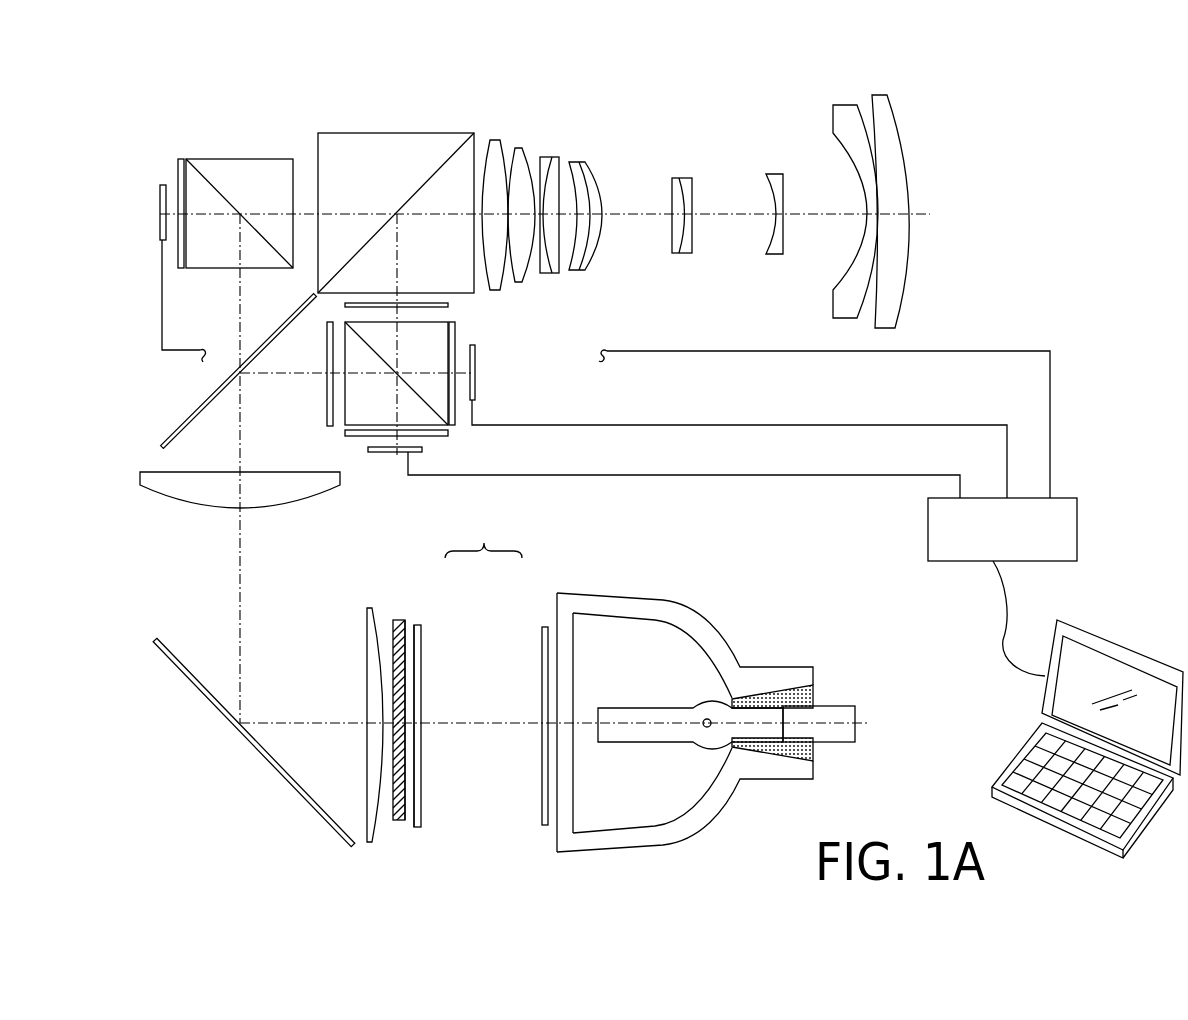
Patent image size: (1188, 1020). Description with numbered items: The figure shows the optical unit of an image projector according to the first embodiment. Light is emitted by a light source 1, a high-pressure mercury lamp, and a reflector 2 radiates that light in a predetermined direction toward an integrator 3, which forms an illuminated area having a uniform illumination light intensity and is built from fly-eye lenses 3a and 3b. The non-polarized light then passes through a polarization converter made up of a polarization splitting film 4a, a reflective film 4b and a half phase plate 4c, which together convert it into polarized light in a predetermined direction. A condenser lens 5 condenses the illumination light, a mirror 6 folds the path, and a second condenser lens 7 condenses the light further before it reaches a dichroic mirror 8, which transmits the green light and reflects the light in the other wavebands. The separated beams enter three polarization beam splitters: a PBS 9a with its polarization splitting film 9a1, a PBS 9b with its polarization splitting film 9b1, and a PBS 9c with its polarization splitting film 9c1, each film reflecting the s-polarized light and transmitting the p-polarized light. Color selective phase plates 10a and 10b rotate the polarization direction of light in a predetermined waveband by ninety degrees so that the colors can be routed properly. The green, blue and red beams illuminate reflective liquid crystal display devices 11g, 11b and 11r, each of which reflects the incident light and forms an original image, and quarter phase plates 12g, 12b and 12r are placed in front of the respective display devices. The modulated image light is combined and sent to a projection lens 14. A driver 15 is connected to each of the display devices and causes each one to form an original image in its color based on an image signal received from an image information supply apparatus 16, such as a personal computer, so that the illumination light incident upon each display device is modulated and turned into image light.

The light source 1 is at (707, 727).
The reflector 2 is at (697, 645).
The integrator 3 is at (483, 536).
The fly-eye lens 3a is at (545, 627).
The fly-eye lens 3b is at (415, 627).
The polarization splitting film 4a is at (418, 827).
The reflective film 4b is at (395, 820).
The ½ phase plate 4c is at (407, 815).
The condenser lens 5 is at (370, 845).
The mirror 6 is at (180, 663).
The condenser lens 7 is at (140, 478).
The dichroic mirror 8 is at (195, 413).
The PBS 9a is at (258, 170).
The polarization splitting film 9a1 is at (210, 183).
The PBS 9b is at (435, 387).
The polarization splitting film 9b1 is at (447, 412).
The PBS 9c is at (350, 145).
The polarization splitting film 9c1 is at (443, 163).
The color selective phase plate 10a is at (325, 395).
The color selective phase plate 10b is at (448, 305).
The reflective liquid crystal display device 11g is at (158, 192).
The reflective liquid crystal display device 11b is at (475, 350).
The reflective liquid crystal display device 11r is at (388, 453).
The ¼ phase plate 12g is at (183, 157).
The ¼ phase plate 12b is at (458, 325).
The ¼ phase plate 12r is at (448, 436).
The projection lens 14 is at (480, 88).
The driver 15 is at (1077, 525).
The image information supply apparatus 16 is at (1143, 660).